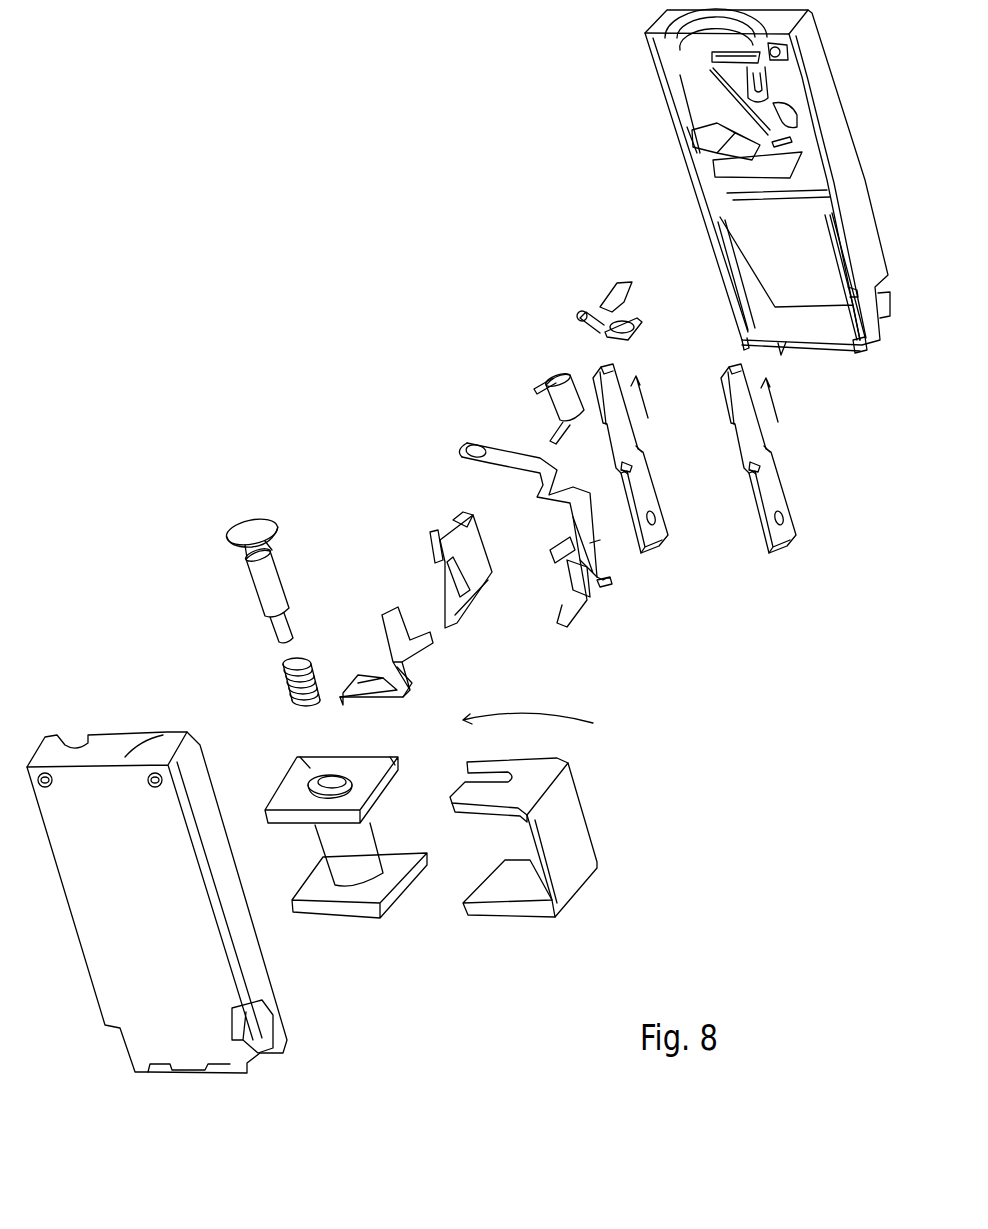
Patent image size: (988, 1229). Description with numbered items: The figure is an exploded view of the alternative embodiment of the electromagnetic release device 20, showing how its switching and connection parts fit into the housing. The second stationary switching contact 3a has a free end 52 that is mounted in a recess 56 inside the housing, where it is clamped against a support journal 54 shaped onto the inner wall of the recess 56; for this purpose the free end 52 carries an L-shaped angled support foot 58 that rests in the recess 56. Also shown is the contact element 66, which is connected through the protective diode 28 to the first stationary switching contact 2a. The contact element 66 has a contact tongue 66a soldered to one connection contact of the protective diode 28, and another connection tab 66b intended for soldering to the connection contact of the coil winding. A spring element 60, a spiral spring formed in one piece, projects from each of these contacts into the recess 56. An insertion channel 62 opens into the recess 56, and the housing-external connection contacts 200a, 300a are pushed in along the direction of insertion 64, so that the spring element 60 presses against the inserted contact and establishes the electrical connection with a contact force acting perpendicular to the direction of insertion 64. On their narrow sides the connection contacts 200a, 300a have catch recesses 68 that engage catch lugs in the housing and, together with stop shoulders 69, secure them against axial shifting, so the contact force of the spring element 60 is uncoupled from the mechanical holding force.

The electromagnetic release device 20 is at (542, 726).
The first stationary switching contact 2a is at (642, 328).
The second stationary switching contact 3a is at (507, 457).
The protective diode 28 is at (563, 393).
The free end 52 is at (593, 545).
The support journal 54 is at (773, 137).
The recess 56 is at (843, 263).
The L-shaped angled support foot 58 is at (612, 587).
The spring element 60 is at (477, 570).
The insertion channel 62 is at (737, 323).
The direction of insertion 64 is at (640, 393).
The contact element 66 is at (472, 542).
The contact tongue 66a is at (430, 543).
The connection tab 66b is at (455, 617).
The catch recesses 68 is at (637, 447).
The stop shoulders 69 is at (625, 487).
The housing-external connection contact 200a is at (652, 528).
The housing-external connection contact 300a is at (780, 525).